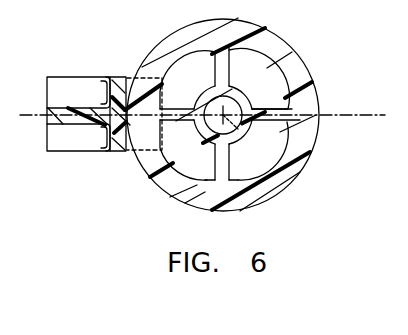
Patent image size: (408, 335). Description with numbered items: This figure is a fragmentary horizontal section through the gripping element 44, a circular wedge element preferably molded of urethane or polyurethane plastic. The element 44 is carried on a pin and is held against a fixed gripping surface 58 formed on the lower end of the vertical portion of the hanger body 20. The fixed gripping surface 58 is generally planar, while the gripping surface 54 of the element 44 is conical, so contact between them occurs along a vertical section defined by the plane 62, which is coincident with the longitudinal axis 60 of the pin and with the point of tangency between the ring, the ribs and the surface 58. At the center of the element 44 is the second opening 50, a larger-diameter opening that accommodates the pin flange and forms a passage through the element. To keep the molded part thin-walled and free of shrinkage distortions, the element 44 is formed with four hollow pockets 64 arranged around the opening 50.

The body 20 is at (72, 78).
The gripping element 44 is at (315, 148).
The second opening 50 is at (212, 113).
The gripping surface 54 is at (295, 56).
The fixed gripping surface 58 is at (131, 84).
The longitudinal axis 60 is at (237, 124).
The plane 62 is at (352, 113).
The hollow pockets 64 is at (205, 82).